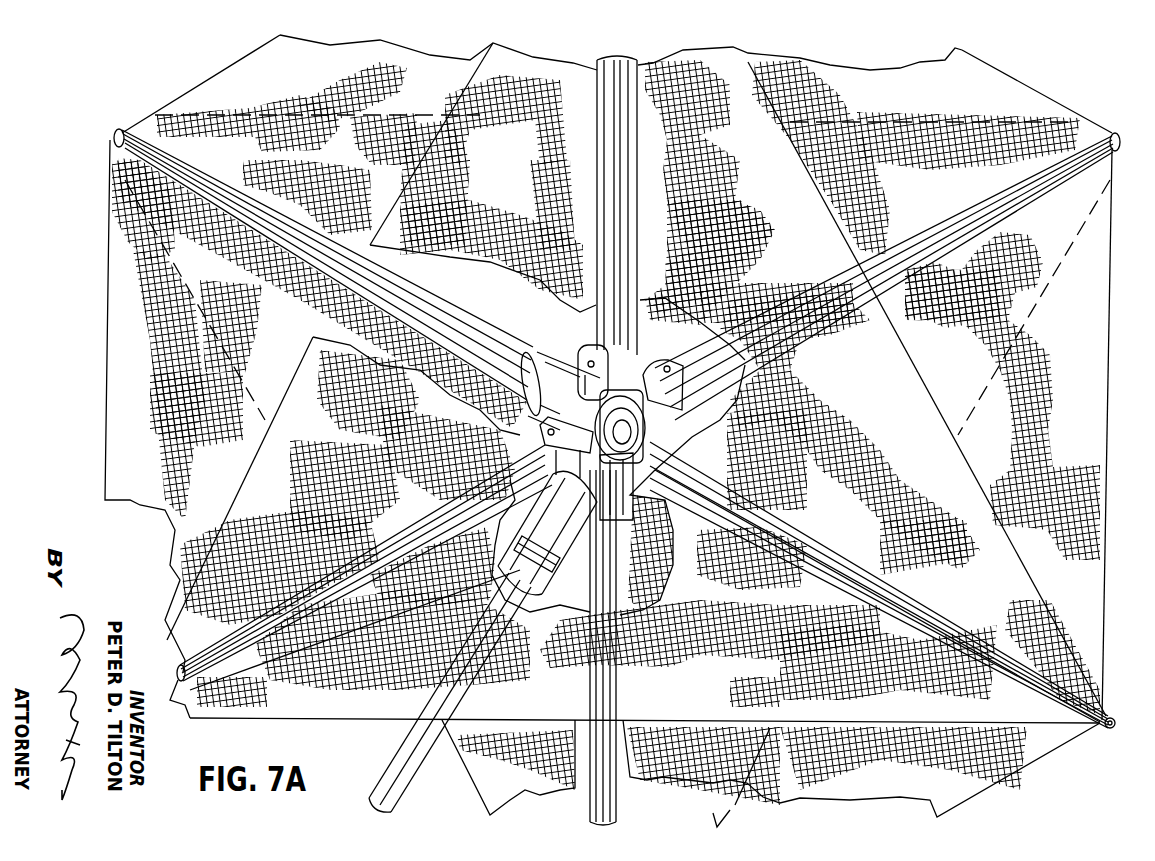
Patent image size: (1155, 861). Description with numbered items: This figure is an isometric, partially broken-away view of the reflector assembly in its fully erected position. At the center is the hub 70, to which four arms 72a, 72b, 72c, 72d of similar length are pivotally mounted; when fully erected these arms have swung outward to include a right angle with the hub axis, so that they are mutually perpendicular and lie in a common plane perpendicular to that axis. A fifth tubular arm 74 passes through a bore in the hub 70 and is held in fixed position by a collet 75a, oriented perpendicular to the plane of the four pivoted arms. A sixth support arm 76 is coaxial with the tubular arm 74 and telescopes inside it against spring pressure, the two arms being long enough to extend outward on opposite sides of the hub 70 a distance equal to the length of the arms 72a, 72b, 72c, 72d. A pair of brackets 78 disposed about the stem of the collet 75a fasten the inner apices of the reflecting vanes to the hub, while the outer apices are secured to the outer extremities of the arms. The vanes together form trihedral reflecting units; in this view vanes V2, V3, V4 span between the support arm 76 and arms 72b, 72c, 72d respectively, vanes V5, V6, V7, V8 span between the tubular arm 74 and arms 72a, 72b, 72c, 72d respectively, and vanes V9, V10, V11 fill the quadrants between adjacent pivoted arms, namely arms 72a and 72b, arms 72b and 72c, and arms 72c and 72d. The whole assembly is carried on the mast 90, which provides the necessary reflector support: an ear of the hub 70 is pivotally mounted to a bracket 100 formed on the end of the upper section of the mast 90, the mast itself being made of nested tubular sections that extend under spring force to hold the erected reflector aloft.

The hub 70 is at (582, 360).
The arm 72a is at (183, 690).
The arm 72b is at (616, 60).
The arm 72c is at (1116, 132).
The arm 72d is at (590, 810).
The fifth tubular arm 74 is at (116, 135).
The collet 75a is at (646, 426).
The sixth support arm 76 is at (1115, 720).
The brackets 78 is at (532, 352).
The mast 90 is at (408, 755).
The bracket 100 is at (548, 555).
The reflecting vane V2 is at (1060, 628).
The reflecting vane V3 is at (1106, 372).
The reflecting vane V4 is at (1020, 776).
The reflecting vane V5 is at (106, 360).
The reflecting vane V6 is at (170, 110).
The reflecting vane V7 is at (220, 115).
The reflecting vane V8 is at (463, 766).
The reflecting vane V9 is at (175, 560).
The reflecting vane V10 is at (1022, 84).
The reflecting vane V11 is at (727, 808).